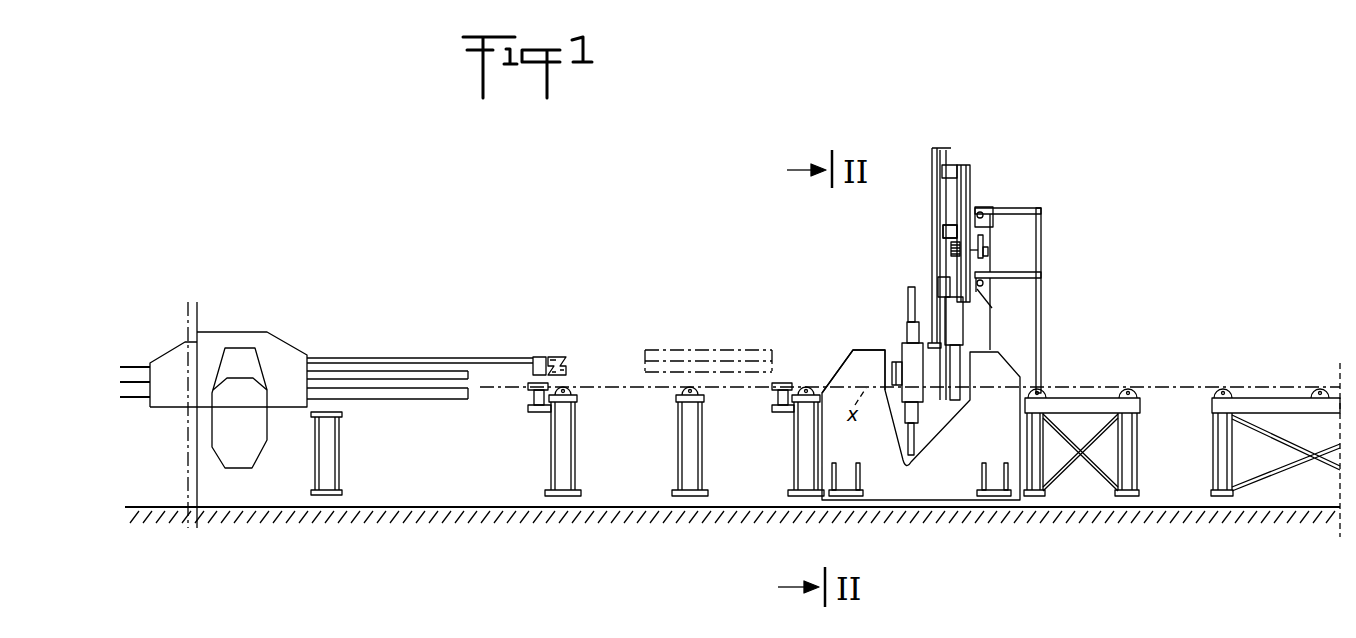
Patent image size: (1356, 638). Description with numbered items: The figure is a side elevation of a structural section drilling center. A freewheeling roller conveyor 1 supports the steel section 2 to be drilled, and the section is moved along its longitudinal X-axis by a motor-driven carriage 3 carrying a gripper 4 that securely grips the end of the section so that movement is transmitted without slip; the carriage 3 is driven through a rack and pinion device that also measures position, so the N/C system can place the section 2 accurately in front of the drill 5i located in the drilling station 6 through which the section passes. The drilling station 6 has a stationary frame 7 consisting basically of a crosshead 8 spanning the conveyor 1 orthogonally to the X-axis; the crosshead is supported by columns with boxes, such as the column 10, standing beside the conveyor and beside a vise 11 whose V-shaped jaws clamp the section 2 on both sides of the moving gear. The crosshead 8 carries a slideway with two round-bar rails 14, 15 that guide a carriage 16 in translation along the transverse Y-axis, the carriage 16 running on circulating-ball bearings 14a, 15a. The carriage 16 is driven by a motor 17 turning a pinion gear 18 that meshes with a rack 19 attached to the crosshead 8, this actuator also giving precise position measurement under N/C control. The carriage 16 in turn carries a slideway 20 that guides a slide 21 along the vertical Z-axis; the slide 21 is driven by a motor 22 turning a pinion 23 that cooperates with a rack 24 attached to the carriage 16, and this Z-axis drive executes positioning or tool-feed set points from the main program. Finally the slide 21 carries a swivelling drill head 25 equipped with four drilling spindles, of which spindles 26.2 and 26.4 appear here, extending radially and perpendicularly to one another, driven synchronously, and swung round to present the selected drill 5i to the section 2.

The freewheeling roller conveyor 1 is at (682, 385).
The steel section 2 is at (698, 355).
The motor-driven carriage 3 is at (245, 341).
The gripper 4 is at (556, 357).
The drill 5i is at (915, 447).
The drilling station 6 is at (1054, 227).
The stationary frame 7 is at (1046, 310).
The crosshead 8 is at (1030, 257).
The column 10 is at (1023, 352).
The vise 11 is at (863, 345).
The rail 14 is at (997, 211).
The bearing 14a is at (986, 206).
The rail 15 is at (985, 287).
The bearing 15a is at (984, 292).
The carriage 16 is at (974, 176).
The motor 17 is at (951, 248).
The pinion gear 18 is at (986, 256).
The rack 19 is at (985, 244).
The slideway 20 is at (951, 167).
The slide 21 is at (949, 313).
The motor 22 is at (978, 193).
The pinion 23 is at (936, 192).
The rack 24 is at (941, 218).
The swivelling drill head 25 is at (893, 398).
The drilling spindle 26.2 is at (918, 424).
The drilling spindle 26.4 is at (908, 331).